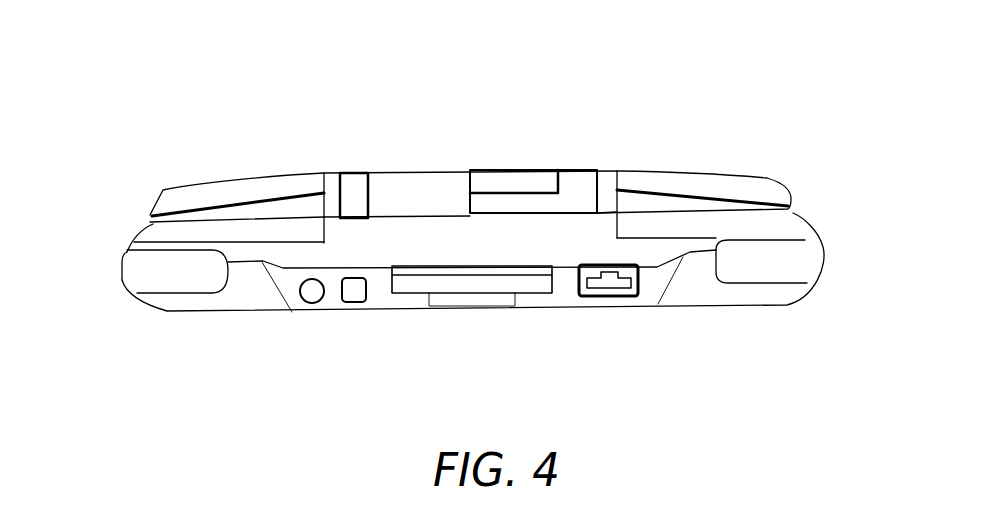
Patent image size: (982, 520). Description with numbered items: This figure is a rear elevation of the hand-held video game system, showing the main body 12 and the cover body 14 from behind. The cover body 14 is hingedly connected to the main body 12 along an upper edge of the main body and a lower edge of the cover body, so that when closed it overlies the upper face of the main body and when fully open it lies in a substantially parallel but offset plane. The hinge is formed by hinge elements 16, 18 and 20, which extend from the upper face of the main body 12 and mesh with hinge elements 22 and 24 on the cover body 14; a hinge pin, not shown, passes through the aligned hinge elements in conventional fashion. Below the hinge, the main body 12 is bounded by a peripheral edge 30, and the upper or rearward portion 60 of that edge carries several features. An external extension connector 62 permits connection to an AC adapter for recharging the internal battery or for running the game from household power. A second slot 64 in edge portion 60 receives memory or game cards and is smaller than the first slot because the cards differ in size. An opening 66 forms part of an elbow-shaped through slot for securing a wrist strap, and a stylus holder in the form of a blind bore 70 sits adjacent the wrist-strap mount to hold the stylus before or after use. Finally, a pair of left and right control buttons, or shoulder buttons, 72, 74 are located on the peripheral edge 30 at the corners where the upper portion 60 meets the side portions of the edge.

The main body 12 is at (792, 302).
The cover body 14 is at (696, 166).
The hinge element 16 is at (322, 170).
The hinge element 18 is at (420, 198).
The hinge element 20 is at (608, 186).
The hinge element 22 is at (351, 170).
The hinge element 24 is at (517, 183).
The peripheral edge 30 is at (114, 270).
The upper or rearward portion of the peripheral edge 60 is at (695, 280).
The external extension connector 62 is at (608, 282).
The second slot 64 is at (502, 287).
The opening 66 is at (353, 297).
The blind bore 70 is at (312, 295).
The left control button 72 is at (808, 279).
The right control button 74 is at (172, 283).